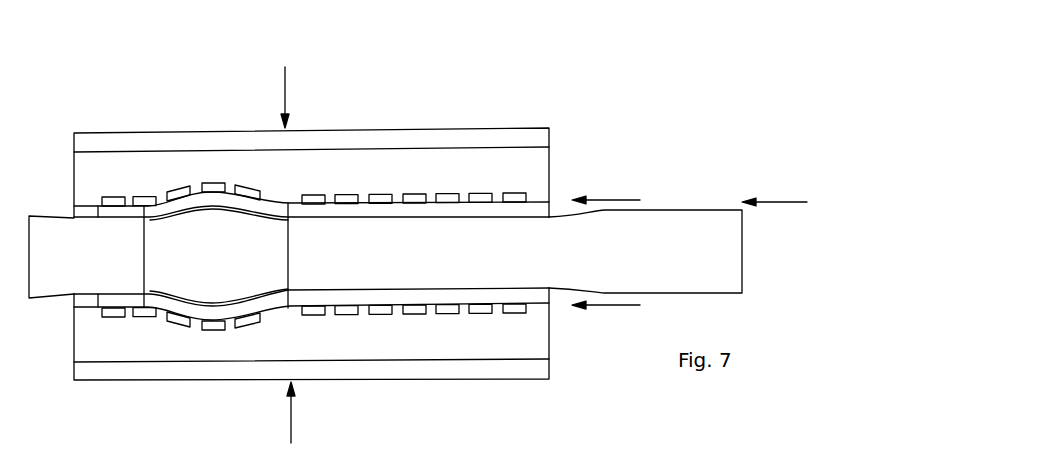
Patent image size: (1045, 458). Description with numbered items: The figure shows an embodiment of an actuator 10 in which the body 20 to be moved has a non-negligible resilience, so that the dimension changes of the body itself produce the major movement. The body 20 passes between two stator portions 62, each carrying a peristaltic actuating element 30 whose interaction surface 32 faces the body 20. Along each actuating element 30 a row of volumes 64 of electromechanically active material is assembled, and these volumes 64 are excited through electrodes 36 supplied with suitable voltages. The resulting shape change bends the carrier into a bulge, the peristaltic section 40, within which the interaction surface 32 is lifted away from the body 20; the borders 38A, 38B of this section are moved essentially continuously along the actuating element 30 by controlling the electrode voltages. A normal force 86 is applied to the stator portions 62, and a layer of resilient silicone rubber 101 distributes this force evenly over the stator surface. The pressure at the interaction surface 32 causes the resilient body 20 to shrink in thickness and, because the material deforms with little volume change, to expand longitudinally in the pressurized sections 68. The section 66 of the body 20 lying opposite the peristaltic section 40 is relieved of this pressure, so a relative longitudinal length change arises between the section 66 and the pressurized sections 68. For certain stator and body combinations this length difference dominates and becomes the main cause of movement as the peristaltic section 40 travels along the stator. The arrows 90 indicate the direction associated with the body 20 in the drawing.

The actuator 10 is at (574, 112).
The body 20 is at (735, 250).
The peristaltic actuating element 30 is at (622, 251).
The interaction surface 32 is at (538, 287).
The electrodes 36 is at (520, 191).
The border of the peristaltic section 38A is at (143, 262).
The border of the peristaltic section 38B is at (288, 245).
The peristaltic section 40 is at (233, 191).
The stator portion 62 is at (97, 139).
The volumes of electromechanically active material 64 is at (381, 193).
The section of the body corresponding to the peristaltic section 66 is at (173, 227).
The pressurized sections 68 is at (127, 284).
The normal force 86 is at (273, 256).
The insertion direction 90 is at (774, 184).
The silicone rubber 101 is at (355, 162).